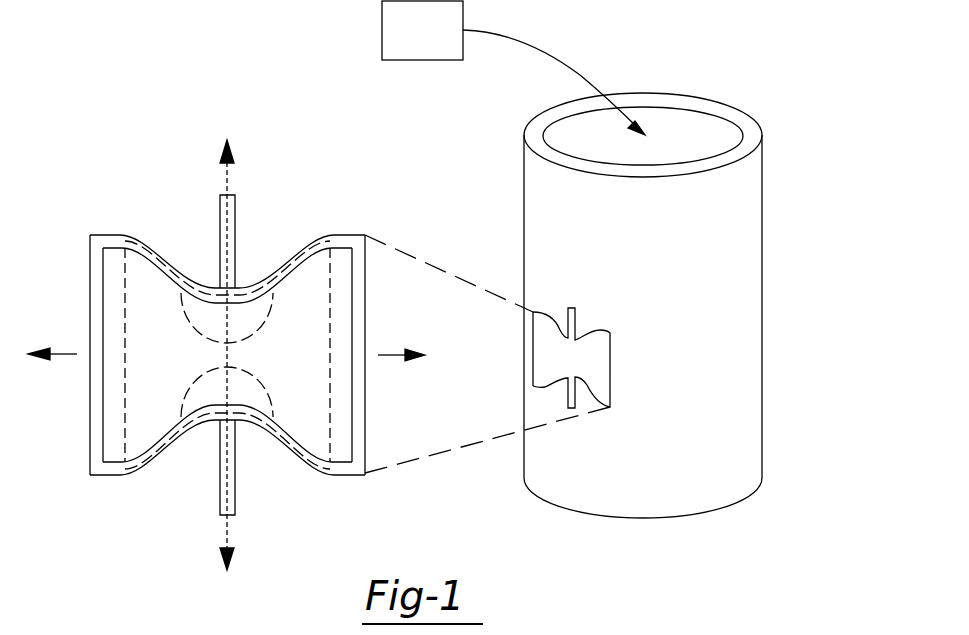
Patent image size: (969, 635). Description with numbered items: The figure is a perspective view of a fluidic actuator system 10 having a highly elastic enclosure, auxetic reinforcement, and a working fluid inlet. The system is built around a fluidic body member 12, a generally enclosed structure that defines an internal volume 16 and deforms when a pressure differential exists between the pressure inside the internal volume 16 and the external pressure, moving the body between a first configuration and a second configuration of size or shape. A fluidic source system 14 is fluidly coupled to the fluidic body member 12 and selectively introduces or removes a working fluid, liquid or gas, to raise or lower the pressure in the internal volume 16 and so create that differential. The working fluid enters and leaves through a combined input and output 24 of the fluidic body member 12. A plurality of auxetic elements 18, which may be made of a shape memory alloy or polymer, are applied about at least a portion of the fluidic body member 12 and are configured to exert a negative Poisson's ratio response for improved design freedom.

The fluidic actuator system 10 is at (661, 272).
The fluidic body member 12 is at (762, 305).
The fluidic source system 14 is at (382, 30).
The internal volume 16 is at (688, 135).
The auxetic element 18 is at (303, 245).
The combined input and output 24 is at (630, 108).